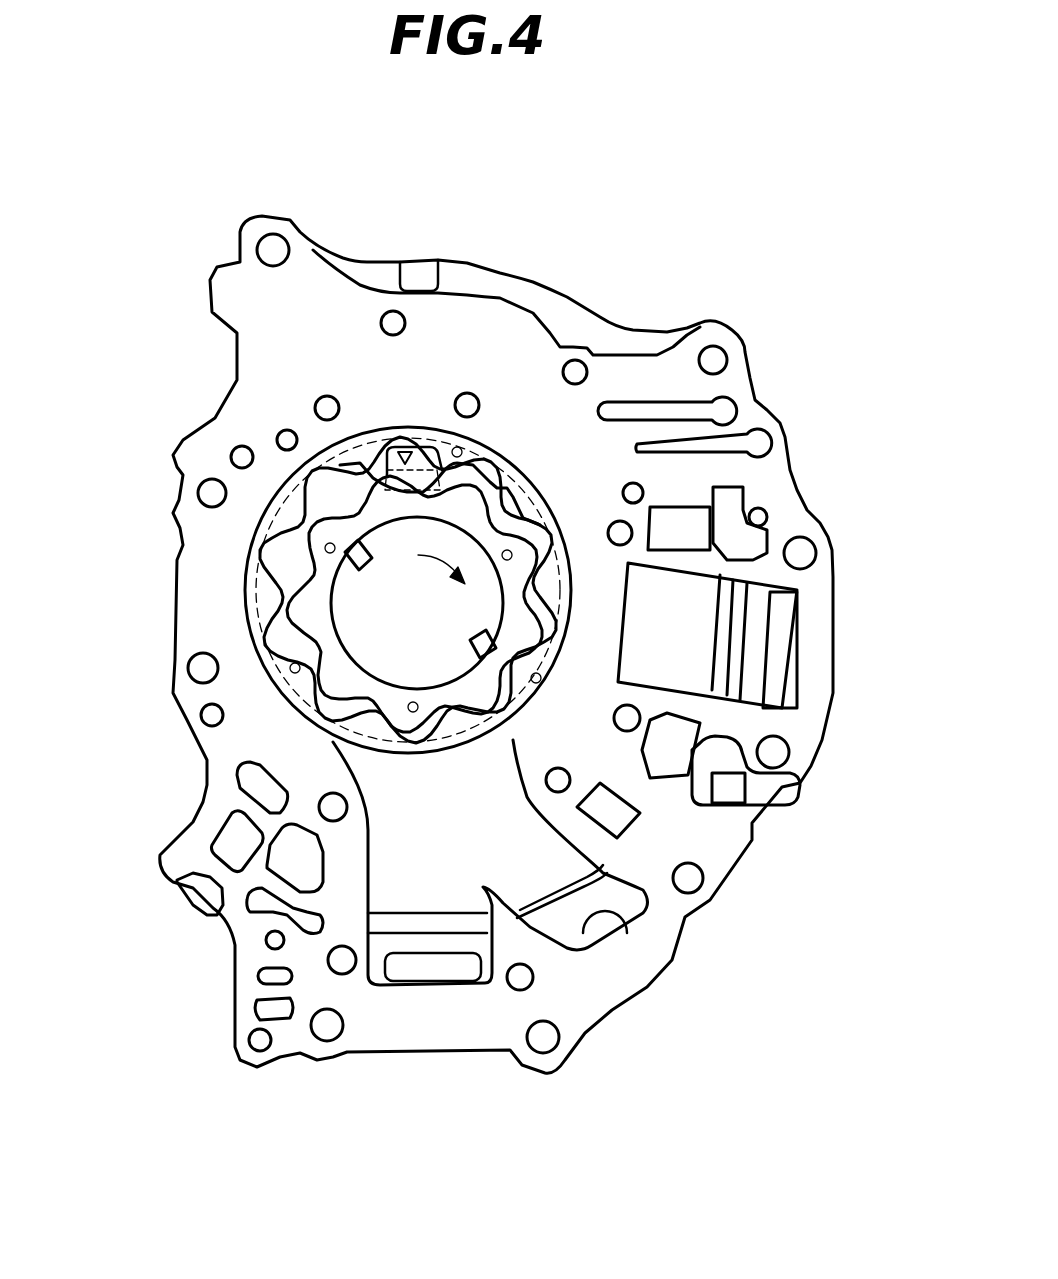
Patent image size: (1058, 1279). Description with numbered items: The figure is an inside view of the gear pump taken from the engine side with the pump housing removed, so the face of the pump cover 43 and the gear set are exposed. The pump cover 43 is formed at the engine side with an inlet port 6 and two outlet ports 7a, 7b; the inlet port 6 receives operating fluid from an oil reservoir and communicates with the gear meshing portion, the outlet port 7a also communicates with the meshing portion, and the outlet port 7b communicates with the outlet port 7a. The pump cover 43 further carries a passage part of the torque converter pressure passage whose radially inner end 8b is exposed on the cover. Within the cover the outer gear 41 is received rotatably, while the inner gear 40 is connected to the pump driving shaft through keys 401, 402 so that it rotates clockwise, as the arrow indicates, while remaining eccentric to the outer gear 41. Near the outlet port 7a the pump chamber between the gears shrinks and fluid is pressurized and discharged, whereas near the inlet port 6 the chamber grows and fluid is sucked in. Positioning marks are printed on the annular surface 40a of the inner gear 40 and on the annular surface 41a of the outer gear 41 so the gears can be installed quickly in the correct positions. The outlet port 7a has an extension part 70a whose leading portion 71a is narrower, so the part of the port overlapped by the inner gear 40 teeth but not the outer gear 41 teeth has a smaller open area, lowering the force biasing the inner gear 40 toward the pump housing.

The pump cover 43 is at (742, 322).
The outer gear 41 is at (538, 684).
The annular surface of the outer gear 41a is at (677, 873).
The inner gear 40 is at (293, 477).
The annular surface of the inner gear 40a is at (305, 530).
The key 401 is at (362, 572).
The key 402 is at (480, 650).
The radially inner end of the passage part 8b is at (351, 517).
The extension part 70a is at (400, 450).
The leading portion 71a is at (428, 467).
The outlet port 7a is at (507, 552).
The outlet port 7b is at (680, 688).
The inlet port 6 is at (370, 873).